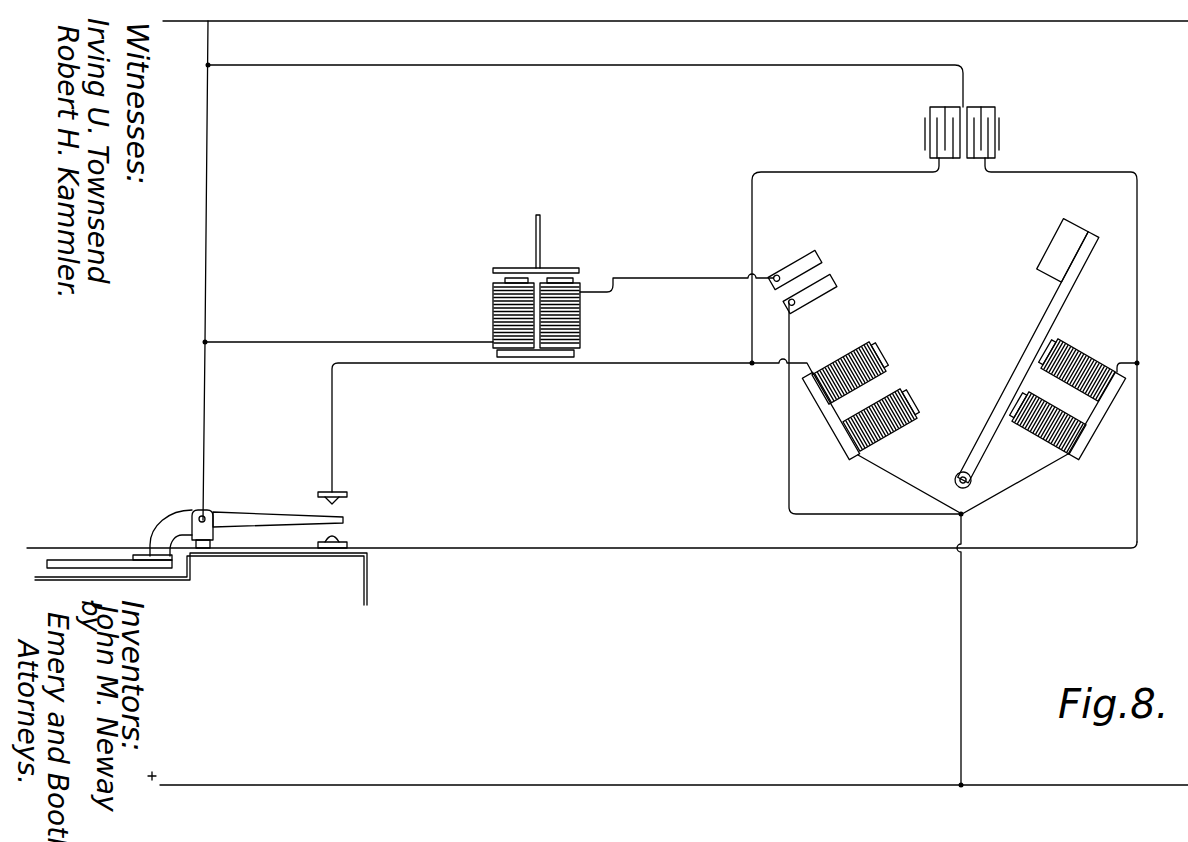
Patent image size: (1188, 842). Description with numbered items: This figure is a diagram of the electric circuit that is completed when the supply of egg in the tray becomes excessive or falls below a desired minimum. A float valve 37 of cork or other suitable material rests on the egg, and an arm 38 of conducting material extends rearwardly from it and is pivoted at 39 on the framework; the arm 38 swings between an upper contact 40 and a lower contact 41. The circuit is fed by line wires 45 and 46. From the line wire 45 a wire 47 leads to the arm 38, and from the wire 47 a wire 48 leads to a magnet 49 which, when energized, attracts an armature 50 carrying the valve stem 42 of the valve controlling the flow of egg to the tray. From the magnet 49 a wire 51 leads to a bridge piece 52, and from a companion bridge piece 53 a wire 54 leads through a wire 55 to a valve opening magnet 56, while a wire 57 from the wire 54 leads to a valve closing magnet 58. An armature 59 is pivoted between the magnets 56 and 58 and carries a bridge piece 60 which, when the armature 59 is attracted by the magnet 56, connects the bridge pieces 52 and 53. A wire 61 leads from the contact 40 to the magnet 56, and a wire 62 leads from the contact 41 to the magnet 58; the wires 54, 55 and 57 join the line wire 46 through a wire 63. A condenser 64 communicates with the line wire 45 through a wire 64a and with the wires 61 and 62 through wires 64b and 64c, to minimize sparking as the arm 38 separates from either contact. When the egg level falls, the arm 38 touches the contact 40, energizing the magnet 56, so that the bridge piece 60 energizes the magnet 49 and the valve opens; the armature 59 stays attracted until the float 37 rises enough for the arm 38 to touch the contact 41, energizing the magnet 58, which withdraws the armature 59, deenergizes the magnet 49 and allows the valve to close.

The float valve 37 is at (80, 560).
The arm 38 is at (268, 513).
The pivot 39 is at (200, 516).
The contact 40 is at (342, 492).
The contact 41 is at (343, 544).
The valve stem 42 is at (541, 242).
The line wire 45 is at (462, 22).
The line wire 46 is at (462, 786).
The wire 47 is at (207, 186).
The wire 48 is at (375, 342).
The magnet 49 is at (576, 330).
The armature 50 is at (579, 268).
The wire 51 is at (688, 280).
The bridge piece 52 is at (815, 253).
The bridge piece 53 is at (821, 297).
The wire 54 is at (789, 426).
The wire 55 is at (963, 484).
The valve opening magnet 56 is at (877, 347).
The wire 57 is at (1042, 466).
The valve closing magnet 58 is at (1085, 360).
The armature 59 is at (1054, 319).
The bridge piece 60 is at (1068, 232).
The wire 61 is at (602, 364).
The wire 62 is at (698, 549).
The wire 63 is at (961, 613).
The condenser 64 is at (998, 132).
The wire 64a is at (765, 66).
The wire 64b is at (845, 253).
The wire 64c is at (1118, 172).